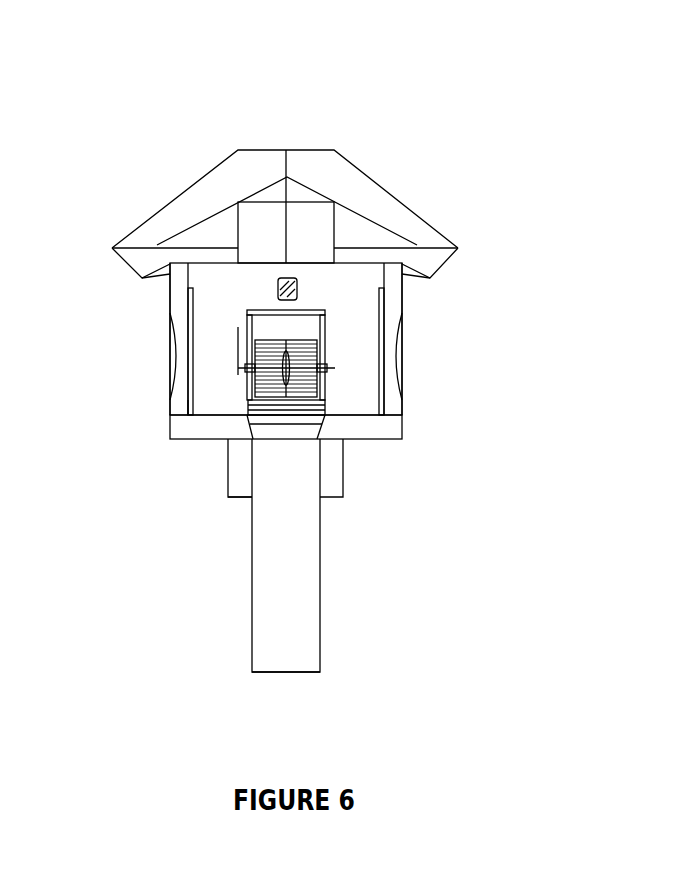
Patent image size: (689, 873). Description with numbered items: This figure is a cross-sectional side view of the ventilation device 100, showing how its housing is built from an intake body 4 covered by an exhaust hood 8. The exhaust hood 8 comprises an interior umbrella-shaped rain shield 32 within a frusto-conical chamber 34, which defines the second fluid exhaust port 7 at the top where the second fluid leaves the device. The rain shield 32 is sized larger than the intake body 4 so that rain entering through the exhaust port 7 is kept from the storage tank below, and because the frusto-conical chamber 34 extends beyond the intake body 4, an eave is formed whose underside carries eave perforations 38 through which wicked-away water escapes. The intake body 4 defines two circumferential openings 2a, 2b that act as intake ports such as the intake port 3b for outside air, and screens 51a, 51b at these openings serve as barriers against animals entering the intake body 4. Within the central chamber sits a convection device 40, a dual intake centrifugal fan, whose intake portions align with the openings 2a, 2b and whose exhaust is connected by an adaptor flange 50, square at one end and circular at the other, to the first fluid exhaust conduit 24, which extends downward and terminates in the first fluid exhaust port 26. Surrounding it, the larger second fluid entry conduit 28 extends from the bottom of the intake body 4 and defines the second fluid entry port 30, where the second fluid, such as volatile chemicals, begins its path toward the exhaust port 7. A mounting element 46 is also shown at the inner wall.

The ventilation device 100 is at (626, 63).
The second fluid exhaust port 7 is at (289, 140).
The exhaust hood 8 is at (296, 160).
The frusto-conical chamber 34 is at (408, 198).
The umbrella-shaped rain shield 32 is at (408, 237).
The eave perforations 38 is at (415, 270).
The screen 51a is at (185, 303).
The screen 51b is at (388, 303).
The circumferential opening 2a is at (175, 340).
The circumferential opening 2b is at (400, 342).
The intake port 3b is at (167, 366).
The wall mount 46 is at (183, 393).
The convection device 40 is at (307, 368).
The intake body 4 is at (383, 440).
The adaptor flange 50 is at (320, 435).
The second fluid entry conduit 28 is at (233, 475).
The second fluid entry port 30 is at (240, 497).
The first fluid exhaust conduit 24 is at (292, 622).
The first fluid exhaust port 26 is at (287, 675).